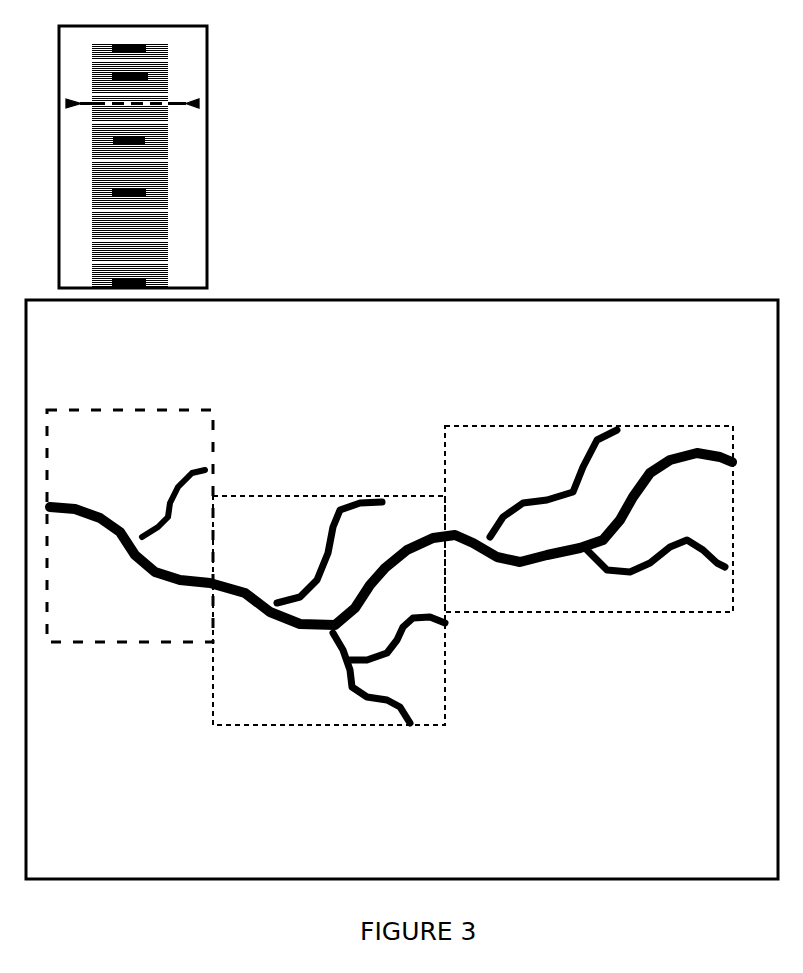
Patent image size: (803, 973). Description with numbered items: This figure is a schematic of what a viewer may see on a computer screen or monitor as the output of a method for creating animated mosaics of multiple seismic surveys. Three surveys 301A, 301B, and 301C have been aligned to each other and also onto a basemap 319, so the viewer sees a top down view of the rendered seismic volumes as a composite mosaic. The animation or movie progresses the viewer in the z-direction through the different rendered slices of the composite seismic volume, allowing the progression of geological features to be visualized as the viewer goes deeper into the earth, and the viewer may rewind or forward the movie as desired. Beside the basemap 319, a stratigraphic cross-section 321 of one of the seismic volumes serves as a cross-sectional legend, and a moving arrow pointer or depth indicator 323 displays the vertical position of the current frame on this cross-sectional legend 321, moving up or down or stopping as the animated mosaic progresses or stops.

The basemap 319 is at (520, 299).
The stratigraphic cross-section 321 is at (206, 140).
The depth indicator 323 is at (198, 104).
The survey 301A is at (132, 409).
The survey 301B is at (335, 495).
The survey 301C is at (607, 427).